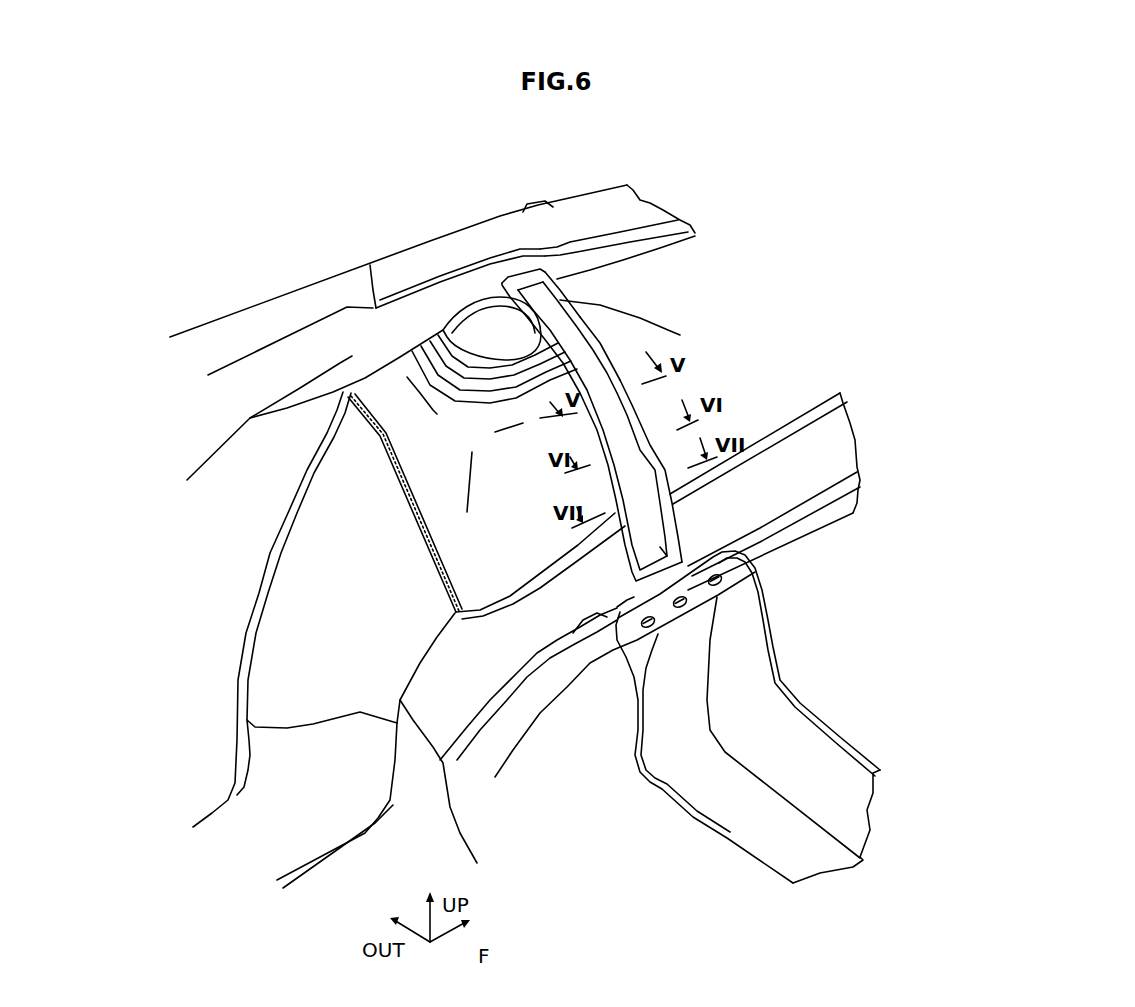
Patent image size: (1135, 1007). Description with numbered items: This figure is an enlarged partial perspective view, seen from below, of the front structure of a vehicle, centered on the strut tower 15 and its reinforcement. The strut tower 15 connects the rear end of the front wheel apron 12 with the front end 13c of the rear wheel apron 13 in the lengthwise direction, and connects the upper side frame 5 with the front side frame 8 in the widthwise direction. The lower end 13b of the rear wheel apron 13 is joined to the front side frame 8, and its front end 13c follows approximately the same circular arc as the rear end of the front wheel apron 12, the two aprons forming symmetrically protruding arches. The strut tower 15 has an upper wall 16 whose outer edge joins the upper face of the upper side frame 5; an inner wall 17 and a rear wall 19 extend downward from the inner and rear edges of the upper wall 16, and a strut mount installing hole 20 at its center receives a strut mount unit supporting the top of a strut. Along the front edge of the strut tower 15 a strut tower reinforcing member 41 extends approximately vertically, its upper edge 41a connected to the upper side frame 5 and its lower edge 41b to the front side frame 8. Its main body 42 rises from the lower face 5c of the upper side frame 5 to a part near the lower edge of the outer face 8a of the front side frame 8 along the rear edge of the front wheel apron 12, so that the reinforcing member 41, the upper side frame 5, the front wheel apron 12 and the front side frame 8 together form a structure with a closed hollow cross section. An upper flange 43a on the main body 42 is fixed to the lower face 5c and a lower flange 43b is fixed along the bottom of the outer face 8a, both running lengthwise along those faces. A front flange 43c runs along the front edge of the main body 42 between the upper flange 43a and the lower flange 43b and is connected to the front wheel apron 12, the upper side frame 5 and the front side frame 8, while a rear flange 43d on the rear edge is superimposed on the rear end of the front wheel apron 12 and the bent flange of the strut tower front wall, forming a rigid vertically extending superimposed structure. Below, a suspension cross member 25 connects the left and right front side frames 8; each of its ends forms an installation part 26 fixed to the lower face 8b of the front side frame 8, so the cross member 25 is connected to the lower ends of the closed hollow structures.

The upper side frame 5 is at (398, 266).
The lower face of the upper side frame 5c is at (617, 192).
The front side frame 8 is at (769, 432).
The outer face of the front side frame 8a is at (818, 520).
The lower face of the front side frame 8b is at (772, 551).
The front wheel apron 12 is at (683, 281).
The rear wheel apron 13 is at (279, 609).
The lower end of the rear wheel apron 13b is at (398, 756).
The front end of the rear wheel apron 13c is at (404, 506).
The strut tower 15 is at (415, 355).
The upper wall 16 is at (346, 297).
The inner wall 17 is at (528, 643).
The rear wall 19 is at (289, 351).
The strut mount installing hole 20 is at (494, 296).
The suspension cross member 25 is at (769, 856).
The installation part 26 is at (693, 747).
The strut tower reinforcing member 41 is at (621, 426).
The upper edge of the strut tower reinforcing member 41a is at (492, 255).
The lower edge of the strut tower reinforcing member 41b is at (713, 727).
The main body 42 is at (643, 426).
The upper flange 43a is at (527, 228).
The lower flange 43b is at (687, 626).
The front flange 43c is at (618, 321).
The rear flange 43d is at (595, 606).